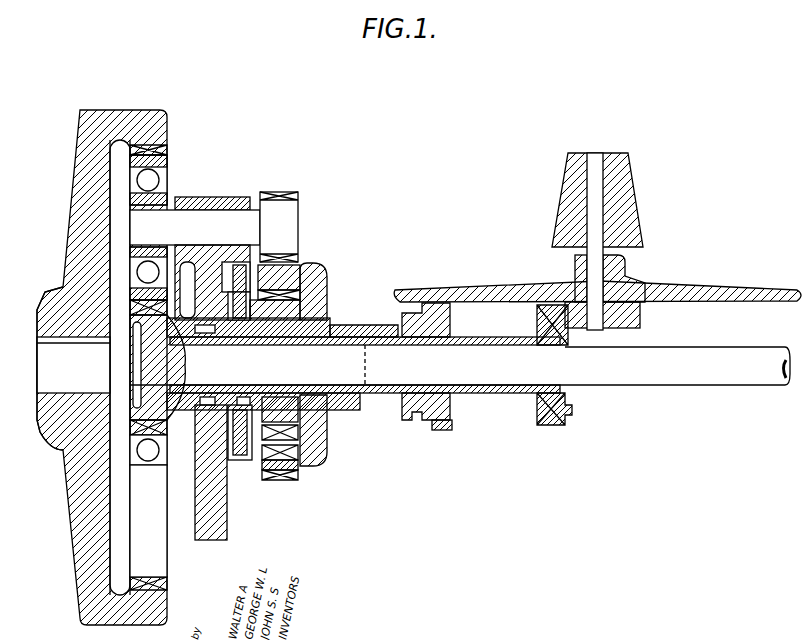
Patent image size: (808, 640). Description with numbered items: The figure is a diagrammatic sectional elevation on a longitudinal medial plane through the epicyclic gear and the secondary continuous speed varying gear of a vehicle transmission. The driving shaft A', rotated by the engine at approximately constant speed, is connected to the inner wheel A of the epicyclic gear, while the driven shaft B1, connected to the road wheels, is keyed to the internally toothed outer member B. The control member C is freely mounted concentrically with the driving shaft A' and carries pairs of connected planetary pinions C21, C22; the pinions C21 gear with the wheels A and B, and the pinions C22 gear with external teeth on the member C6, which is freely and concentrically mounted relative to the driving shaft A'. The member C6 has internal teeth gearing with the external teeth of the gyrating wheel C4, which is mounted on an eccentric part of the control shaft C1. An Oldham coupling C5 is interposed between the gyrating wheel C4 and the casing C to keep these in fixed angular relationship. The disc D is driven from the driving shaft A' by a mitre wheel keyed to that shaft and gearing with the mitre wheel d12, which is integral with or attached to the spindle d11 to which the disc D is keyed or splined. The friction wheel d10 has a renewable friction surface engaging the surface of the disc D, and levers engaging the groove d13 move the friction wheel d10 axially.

The internally toothed outer member B is at (152, 136).
The driven shaft B1 is at (48, 380).
The planetary pinion C21 is at (152, 182).
The control member C is at (214, 198).
The planetary pinion C22 is at (284, 232).
The Oldham coupling C5 is at (292, 266).
The gyrating wheel C4 is at (301, 301).
The member C6 is at (322, 276).
The inner wheel A is at (363, 438).
The driving shaft A' is at (460, 380).
The control shaft C1 is at (391, 393).
The groove d13 is at (414, 421).
The friction wheel d10 is at (448, 428).
The disc D is at (745, 300).
The mitre wheel d12 is at (634, 300).
The spindle d11 is at (598, 214).